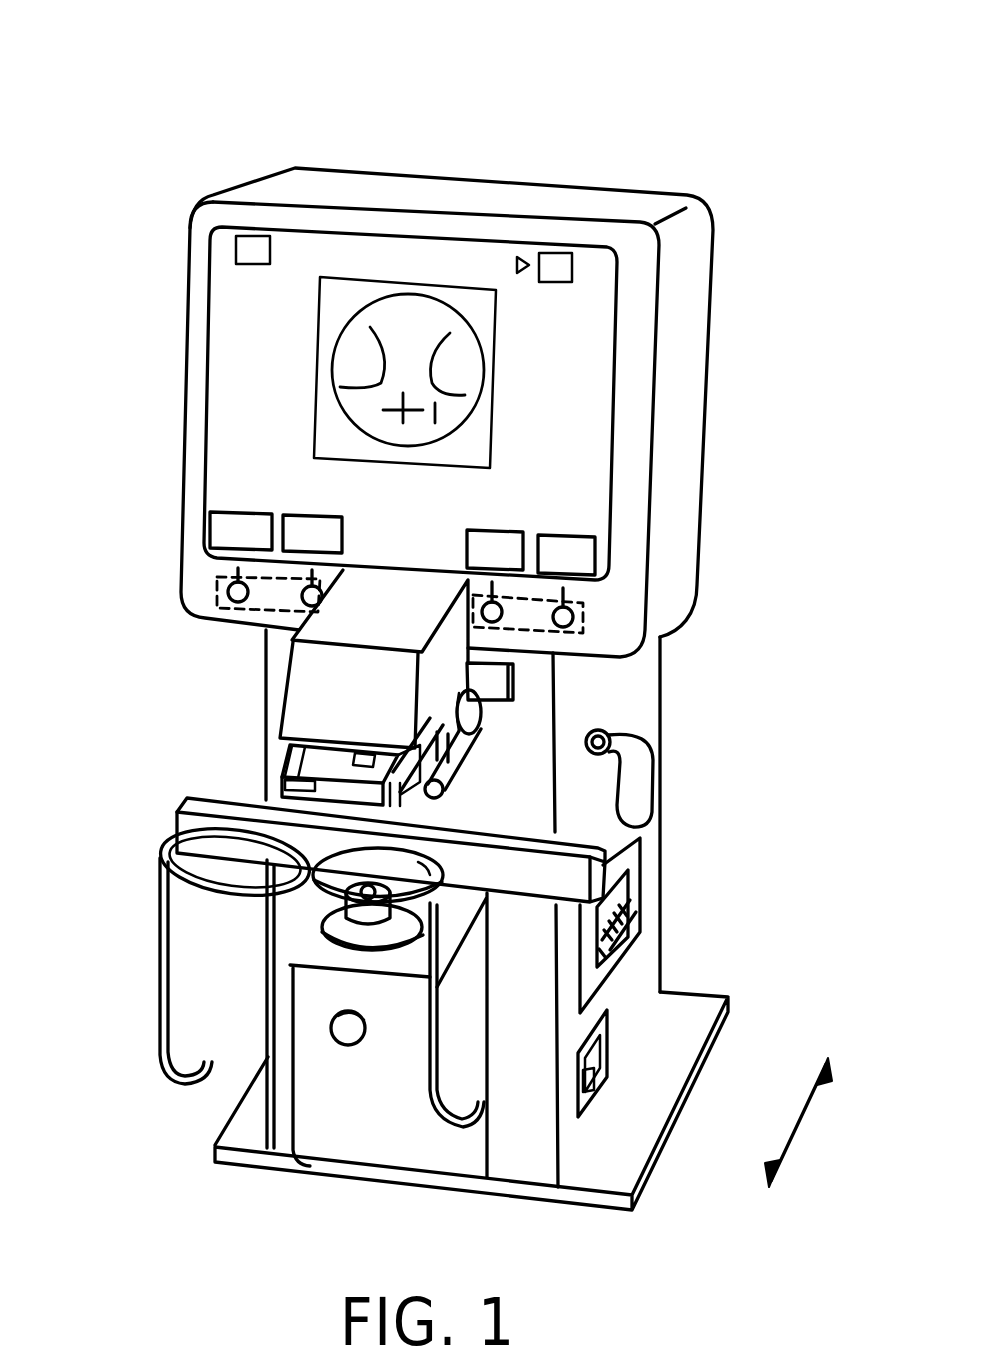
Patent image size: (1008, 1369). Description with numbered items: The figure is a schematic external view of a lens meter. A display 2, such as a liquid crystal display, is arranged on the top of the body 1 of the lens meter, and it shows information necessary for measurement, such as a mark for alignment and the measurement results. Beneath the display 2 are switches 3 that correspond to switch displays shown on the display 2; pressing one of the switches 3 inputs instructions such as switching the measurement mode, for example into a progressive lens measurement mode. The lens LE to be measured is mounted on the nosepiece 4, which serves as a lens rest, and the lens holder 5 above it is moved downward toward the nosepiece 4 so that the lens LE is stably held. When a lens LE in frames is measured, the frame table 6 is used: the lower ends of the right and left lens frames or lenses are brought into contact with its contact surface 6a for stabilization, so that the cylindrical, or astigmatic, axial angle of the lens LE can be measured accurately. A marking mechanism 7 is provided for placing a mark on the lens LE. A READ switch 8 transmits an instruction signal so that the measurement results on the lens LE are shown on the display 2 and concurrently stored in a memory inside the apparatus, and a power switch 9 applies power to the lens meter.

The body 1 is at (583, 152).
The display 2 is at (240, 468).
The switches 3 is at (214, 590).
The nosepiece 4 is at (333, 928).
The lens holder 5 is at (288, 765).
The frame table 6 is at (187, 798).
The contact surface 6a is at (575, 878).
The marking mechanism 7 is at (440, 760).
The READ switch 8 is at (347, 1030).
The power switch 9 is at (583, 1060).
The lens LE is at (398, 865).